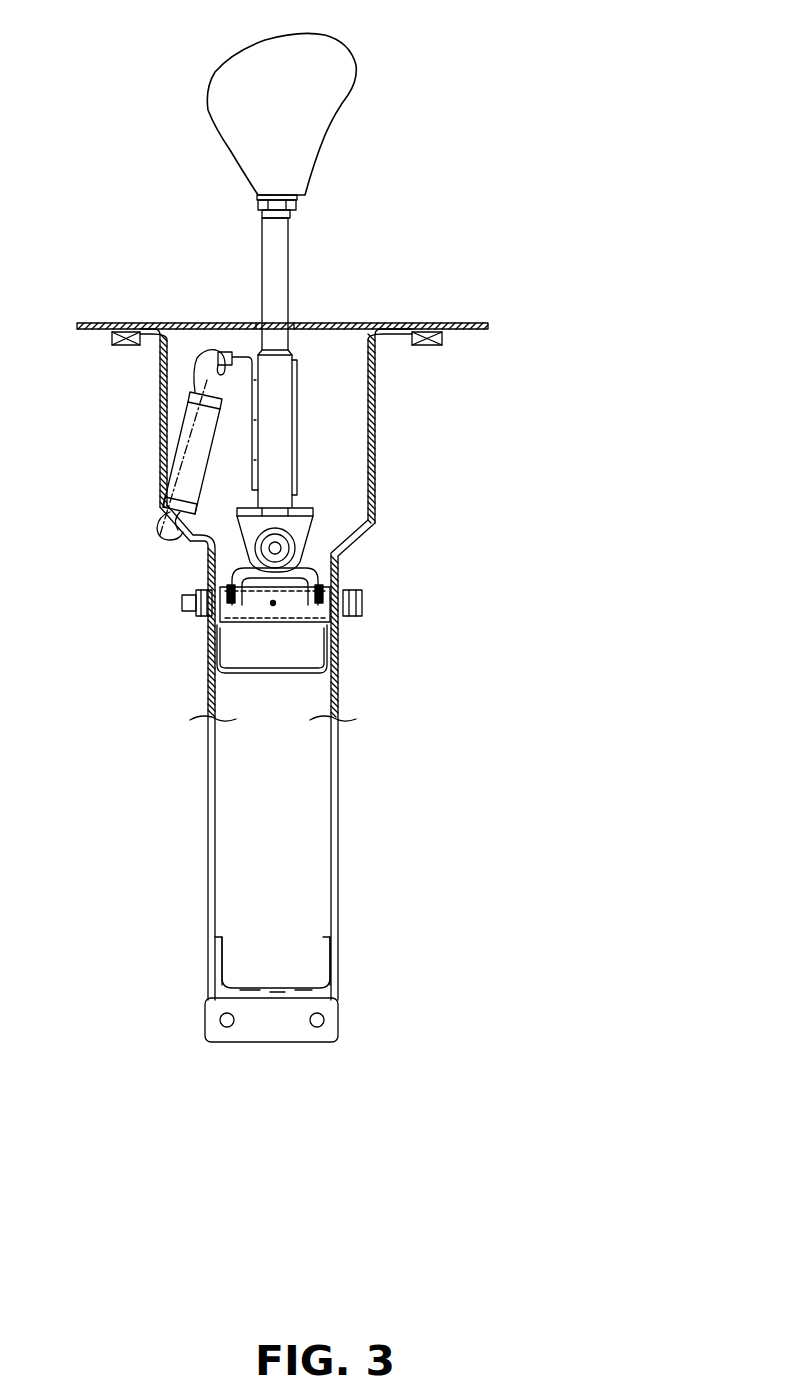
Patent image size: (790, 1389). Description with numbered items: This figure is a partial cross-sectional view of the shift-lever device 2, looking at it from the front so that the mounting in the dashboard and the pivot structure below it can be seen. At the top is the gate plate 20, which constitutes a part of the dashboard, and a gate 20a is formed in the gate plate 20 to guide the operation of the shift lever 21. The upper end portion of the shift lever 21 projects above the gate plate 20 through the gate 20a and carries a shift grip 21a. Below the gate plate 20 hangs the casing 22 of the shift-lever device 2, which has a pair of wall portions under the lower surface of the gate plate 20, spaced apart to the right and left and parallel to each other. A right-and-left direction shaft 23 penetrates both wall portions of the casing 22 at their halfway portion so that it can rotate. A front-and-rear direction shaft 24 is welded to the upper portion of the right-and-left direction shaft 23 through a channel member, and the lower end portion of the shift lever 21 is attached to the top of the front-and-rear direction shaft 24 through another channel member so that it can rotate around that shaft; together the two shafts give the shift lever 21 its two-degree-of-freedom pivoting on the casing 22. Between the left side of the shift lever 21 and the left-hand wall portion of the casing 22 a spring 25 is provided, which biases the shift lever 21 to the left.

The shift-lever device 2 is at (122, 142).
The gate plate 20 is at (418, 323).
The gate 20a is at (305, 324).
The shift lever 21 is at (262, 259).
The shift grip 21a is at (352, 53).
The casing 22 is at (375, 425).
The right-and-left direction shaft 23 is at (293, 610).
The front-and-rear direction shaft 24 is at (287, 548).
The spring 25 is at (160, 433).